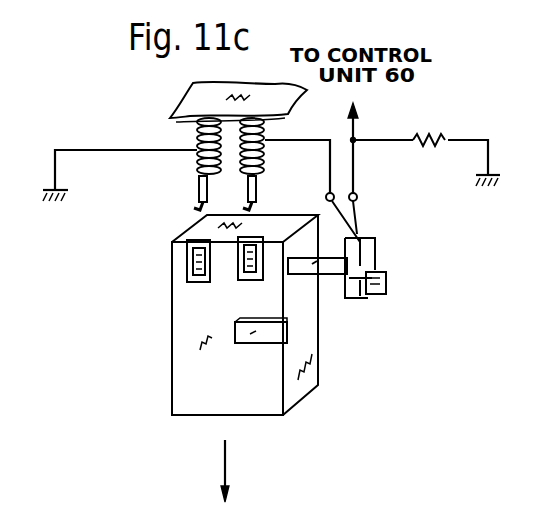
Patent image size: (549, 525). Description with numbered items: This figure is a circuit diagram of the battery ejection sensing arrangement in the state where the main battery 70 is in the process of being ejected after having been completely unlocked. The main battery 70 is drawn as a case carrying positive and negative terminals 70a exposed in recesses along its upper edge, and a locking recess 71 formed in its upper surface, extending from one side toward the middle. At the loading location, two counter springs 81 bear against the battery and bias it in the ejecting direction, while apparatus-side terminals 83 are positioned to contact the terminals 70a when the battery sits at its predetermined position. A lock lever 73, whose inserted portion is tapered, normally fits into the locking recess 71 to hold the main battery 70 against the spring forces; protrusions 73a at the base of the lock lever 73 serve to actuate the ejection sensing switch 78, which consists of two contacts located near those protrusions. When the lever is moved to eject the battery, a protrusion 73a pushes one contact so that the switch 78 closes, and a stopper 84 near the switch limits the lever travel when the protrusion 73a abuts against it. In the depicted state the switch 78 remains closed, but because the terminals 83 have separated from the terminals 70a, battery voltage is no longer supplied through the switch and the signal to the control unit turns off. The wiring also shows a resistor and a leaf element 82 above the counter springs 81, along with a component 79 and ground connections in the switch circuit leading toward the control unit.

The pressure plate 82 is at (195, 100).
The counter springs 81 is at (197, 136).
The terminals 83 is at (248, 198).
The resistor 79 is at (420, 146).
The ejection sensing switch 78 is at (370, 221).
The stopper 84 is at (386, 283).
The lock lever 73 is at (328, 278).
The protrusions 73a is at (360, 294).
The main battery 70 is at (175, 372).
The terminals 70a is at (238, 262).
The locking recess 71 is at (245, 345).